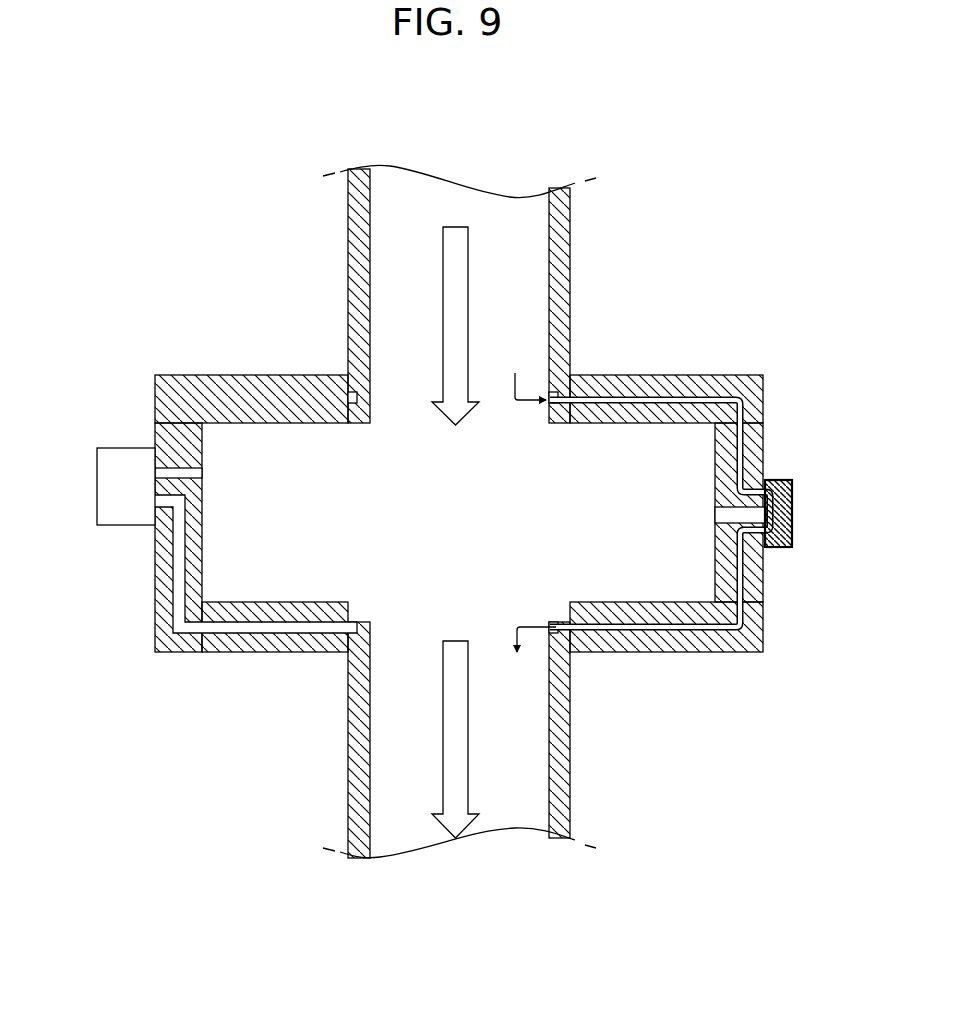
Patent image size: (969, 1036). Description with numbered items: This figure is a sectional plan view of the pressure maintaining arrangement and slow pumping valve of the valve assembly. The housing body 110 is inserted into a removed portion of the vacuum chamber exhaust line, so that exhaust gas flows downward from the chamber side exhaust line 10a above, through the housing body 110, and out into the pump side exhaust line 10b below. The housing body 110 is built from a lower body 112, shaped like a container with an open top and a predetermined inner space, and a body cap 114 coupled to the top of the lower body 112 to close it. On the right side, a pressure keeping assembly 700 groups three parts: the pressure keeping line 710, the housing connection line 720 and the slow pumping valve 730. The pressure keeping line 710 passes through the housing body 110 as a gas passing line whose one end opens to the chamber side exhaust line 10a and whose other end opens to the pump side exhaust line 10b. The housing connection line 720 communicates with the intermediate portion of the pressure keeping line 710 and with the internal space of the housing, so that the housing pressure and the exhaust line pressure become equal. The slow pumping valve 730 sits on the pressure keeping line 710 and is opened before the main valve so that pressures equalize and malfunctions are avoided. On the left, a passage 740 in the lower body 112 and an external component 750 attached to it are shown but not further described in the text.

The chamber side exhaust line 10a is at (560, 262).
The pump side exhaust line 10b is at (565, 727).
The housing body 110 is at (200, 452).
The lower body 112 is at (163, 563).
The body cap 114 is at (182, 387).
The sensor assembly 700 is at (701, 452).
The pressure keeping line 710 is at (682, 385).
The housing connection line 720 is at (728, 512).
The slow pumping valve 730 is at (792, 490).
The channel 740 is at (237, 627).
The connector 750 is at (123, 465).